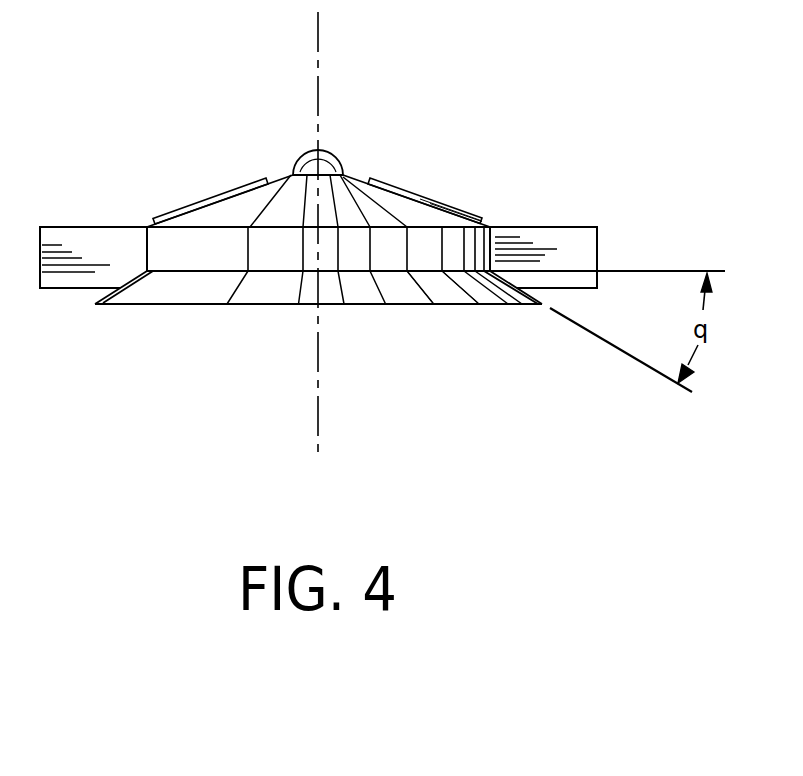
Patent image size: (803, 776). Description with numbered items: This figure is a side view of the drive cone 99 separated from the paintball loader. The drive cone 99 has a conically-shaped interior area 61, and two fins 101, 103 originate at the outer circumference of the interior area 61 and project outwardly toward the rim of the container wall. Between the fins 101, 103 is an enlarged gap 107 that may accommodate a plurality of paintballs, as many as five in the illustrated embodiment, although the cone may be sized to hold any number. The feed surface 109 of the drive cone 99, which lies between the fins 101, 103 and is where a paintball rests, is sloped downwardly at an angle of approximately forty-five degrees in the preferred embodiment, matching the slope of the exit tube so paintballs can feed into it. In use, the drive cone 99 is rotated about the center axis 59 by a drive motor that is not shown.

The center axis 59 is at (318, 83).
The conically-shaped interior area 61 is at (425, 245).
The drive cone 99 is at (267, 290).
The fin 101 is at (98, 245).
The fin 103 is at (578, 245).
The enlarged gap 107 is at (452, 293).
The feed surface 109 is at (404, 296).